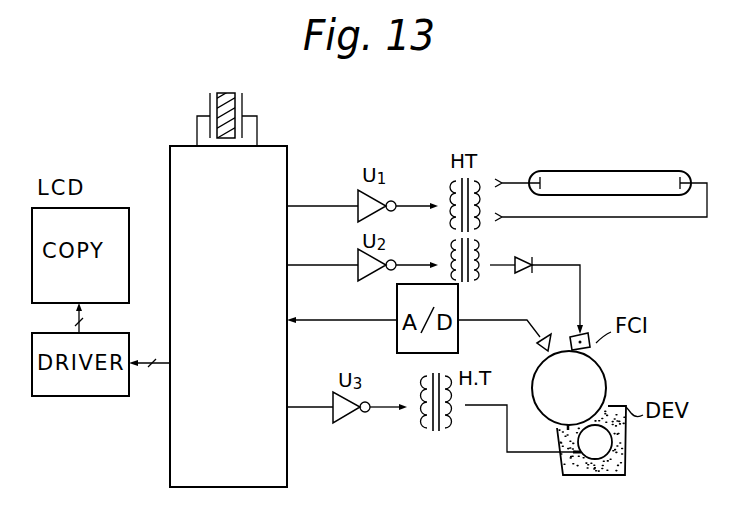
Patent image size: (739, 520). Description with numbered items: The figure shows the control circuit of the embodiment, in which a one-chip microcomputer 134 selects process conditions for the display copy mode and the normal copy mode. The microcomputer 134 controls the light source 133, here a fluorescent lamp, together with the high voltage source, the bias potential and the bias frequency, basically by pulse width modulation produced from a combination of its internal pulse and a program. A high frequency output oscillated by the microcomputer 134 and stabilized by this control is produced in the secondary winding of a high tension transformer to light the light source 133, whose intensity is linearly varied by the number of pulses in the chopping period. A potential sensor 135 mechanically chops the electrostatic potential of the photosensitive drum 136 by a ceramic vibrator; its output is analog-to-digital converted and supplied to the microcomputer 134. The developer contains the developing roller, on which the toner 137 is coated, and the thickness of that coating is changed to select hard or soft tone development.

The light source 133 is at (587, 180).
The one-chip microcomputer (MCU) 134 is at (176, 447).
The potential sensor 135 is at (546, 334).
The photosensitive drum 136 is at (603, 372).
The toner 137 is at (618, 452).